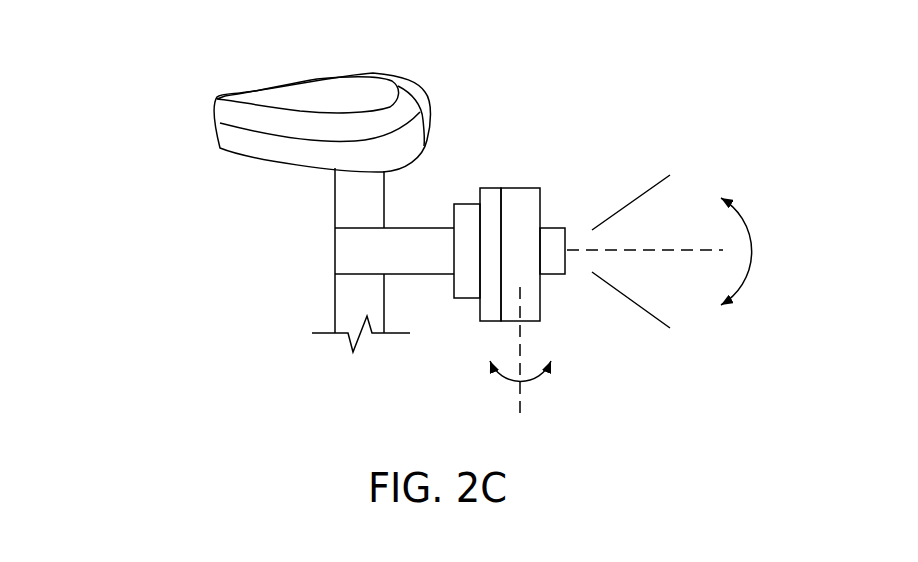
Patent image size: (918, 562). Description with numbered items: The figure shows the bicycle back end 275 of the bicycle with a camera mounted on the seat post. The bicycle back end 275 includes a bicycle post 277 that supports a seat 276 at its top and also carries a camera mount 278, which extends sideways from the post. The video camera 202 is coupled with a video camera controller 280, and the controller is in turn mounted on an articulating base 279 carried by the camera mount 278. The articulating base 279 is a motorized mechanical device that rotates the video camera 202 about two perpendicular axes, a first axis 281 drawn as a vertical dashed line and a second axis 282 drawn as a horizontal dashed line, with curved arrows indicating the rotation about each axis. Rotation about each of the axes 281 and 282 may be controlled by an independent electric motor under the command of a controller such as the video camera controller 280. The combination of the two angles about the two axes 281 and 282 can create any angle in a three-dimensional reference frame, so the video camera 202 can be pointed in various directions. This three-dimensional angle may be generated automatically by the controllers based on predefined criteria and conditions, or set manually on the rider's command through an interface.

The bicycle back end 275 is at (184, 63).
The seat 276 is at (407, 90).
The bicycle post 277 is at (360, 195).
The camera mount 278 is at (360, 252).
The articulating base 279 is at (467, 285).
The video camera controller 280 is at (492, 187).
The video camera 202 is at (519, 188).
The axis 281 is at (522, 405).
The axis 282 is at (673, 250).